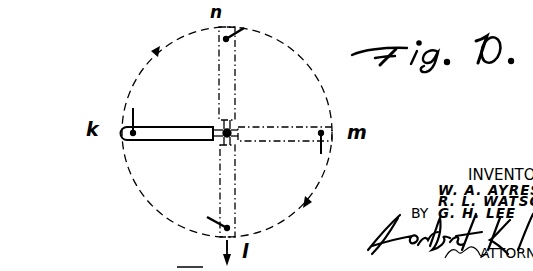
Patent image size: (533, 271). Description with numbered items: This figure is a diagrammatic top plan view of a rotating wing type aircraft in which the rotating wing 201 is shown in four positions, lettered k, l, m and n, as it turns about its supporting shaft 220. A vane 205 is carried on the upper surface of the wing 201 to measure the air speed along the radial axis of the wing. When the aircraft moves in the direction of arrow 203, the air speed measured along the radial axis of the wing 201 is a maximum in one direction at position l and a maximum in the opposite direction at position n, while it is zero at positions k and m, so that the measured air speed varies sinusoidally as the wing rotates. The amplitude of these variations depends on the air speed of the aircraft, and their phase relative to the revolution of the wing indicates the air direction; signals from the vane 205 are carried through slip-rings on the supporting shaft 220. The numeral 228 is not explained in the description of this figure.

The arm member 201 is at (233, 65).
The stop pin 205 is at (240, 27).
The pivot hub 220 is at (229, 131).
The pointer 203 is at (224, 250).
The reference element 228 is at (42, 6).